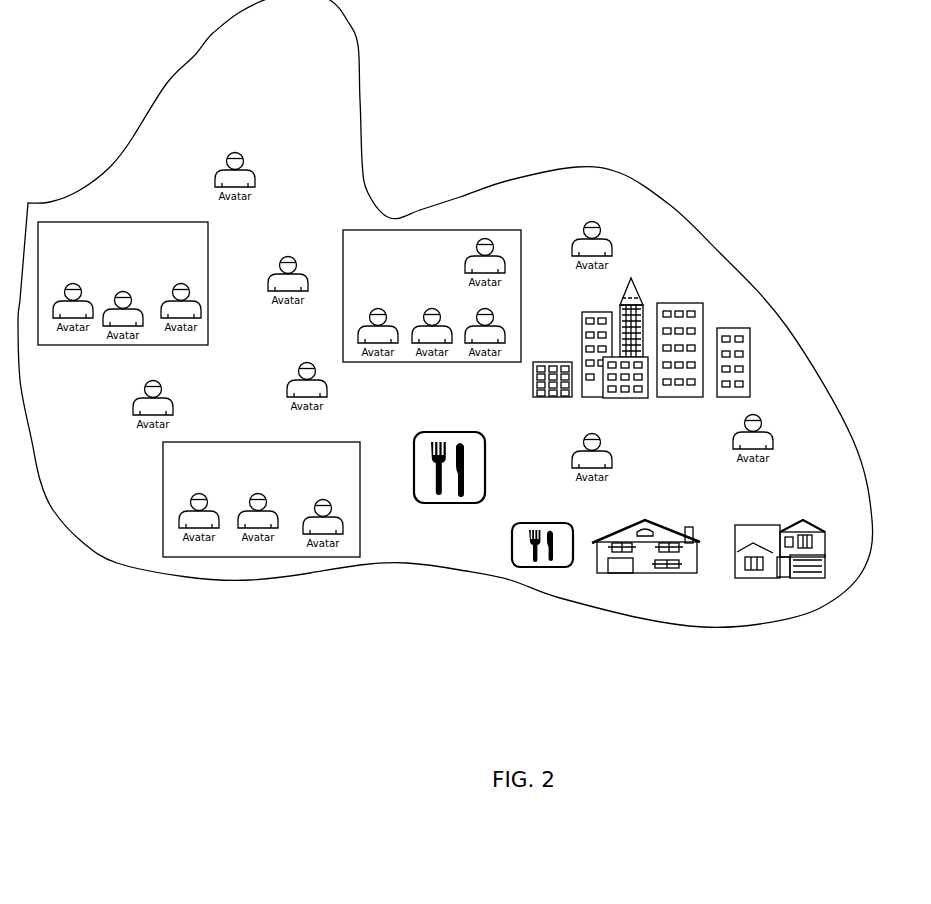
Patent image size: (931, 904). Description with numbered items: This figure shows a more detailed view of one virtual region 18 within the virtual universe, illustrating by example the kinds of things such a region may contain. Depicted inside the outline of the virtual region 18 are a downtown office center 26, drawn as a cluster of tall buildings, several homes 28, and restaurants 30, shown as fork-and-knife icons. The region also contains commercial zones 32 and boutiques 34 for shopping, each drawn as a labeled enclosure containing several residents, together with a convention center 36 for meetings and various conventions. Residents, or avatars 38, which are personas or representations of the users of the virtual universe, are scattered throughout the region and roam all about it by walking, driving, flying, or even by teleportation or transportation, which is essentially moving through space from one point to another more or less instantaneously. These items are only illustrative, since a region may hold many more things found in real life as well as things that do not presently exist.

The virtual region 18 is at (358, 45).
The downtown office center 26 is at (700, 298).
The homes 28 is at (655, 573).
The restaurants 30 is at (485, 472).
The commercial zones 32 is at (125, 222).
The boutiques 34 is at (162, 500).
The convention center 36 is at (423, 362).
The avatars 38 is at (253, 167).